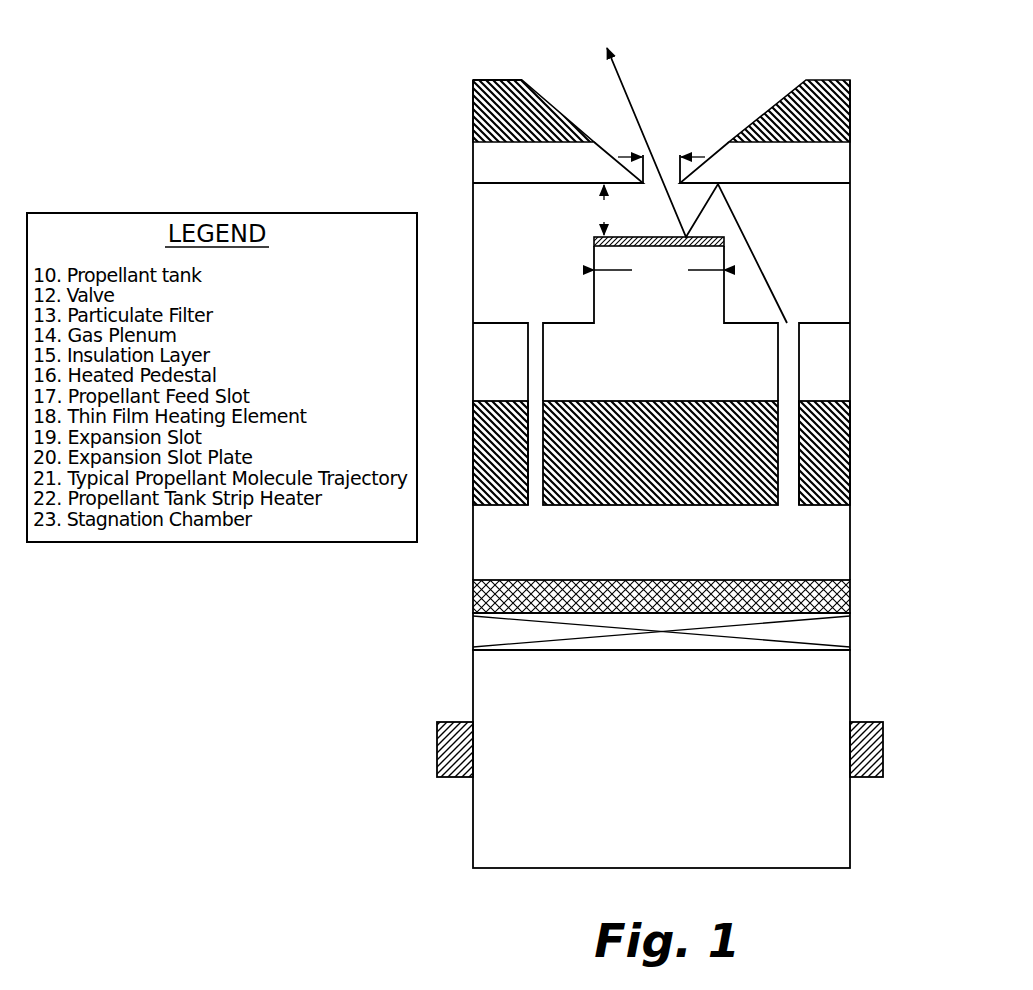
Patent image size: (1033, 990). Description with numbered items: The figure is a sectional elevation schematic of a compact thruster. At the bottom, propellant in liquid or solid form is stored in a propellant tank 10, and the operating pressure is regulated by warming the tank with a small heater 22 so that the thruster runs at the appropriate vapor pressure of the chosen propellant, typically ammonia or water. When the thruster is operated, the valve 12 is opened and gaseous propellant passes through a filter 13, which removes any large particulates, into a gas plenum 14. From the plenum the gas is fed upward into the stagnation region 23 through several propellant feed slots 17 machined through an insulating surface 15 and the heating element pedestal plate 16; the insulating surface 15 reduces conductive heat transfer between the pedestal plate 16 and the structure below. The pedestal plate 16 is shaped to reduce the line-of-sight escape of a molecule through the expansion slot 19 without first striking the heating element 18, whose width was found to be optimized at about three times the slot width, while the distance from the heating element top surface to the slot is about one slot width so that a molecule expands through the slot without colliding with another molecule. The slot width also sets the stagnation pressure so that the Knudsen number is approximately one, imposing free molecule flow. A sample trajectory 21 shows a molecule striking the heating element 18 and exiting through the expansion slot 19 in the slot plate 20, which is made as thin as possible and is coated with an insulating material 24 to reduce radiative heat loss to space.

The propellant tank 10 is at (655, 782).
The valve 12 is at (473, 639).
The filter 13 is at (473, 597).
The gas plenum 14 is at (634, 562).
The insulating surface 15 is at (473, 475).
The heating element pedestal plate 16 is at (637, 357).
The propellant feed slots 17 is at (530, 320).
The heating element 18 is at (590, 240).
The expansion slot 19 is at (651, 175).
The slot plate 20 is at (452, 165).
The sample trajectory 21 is at (682, 177).
The heater 22 is at (883, 750).
The stagnation region 23 is at (796, 267).
The insulating material 24 is at (473, 80).